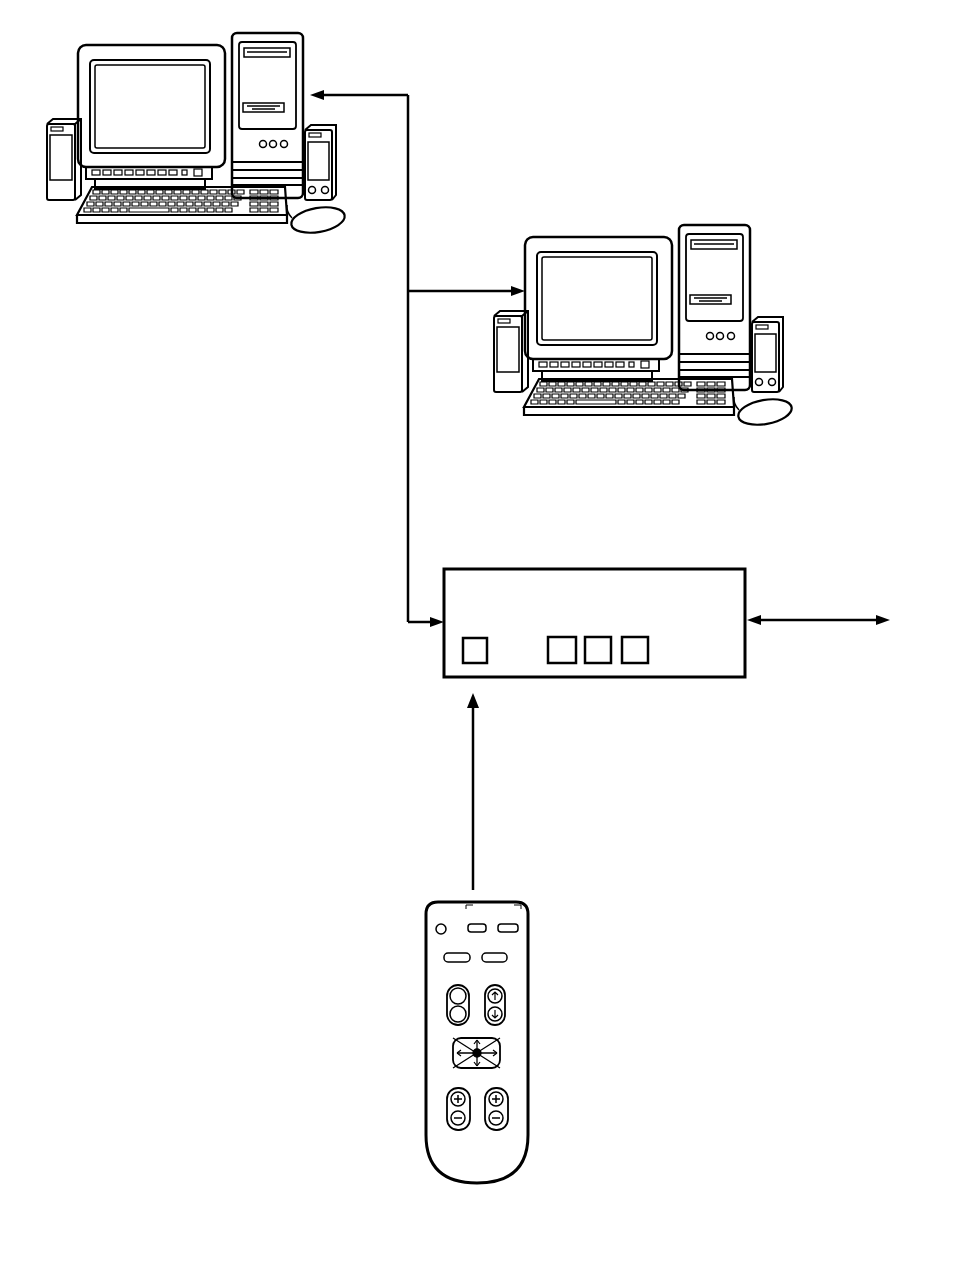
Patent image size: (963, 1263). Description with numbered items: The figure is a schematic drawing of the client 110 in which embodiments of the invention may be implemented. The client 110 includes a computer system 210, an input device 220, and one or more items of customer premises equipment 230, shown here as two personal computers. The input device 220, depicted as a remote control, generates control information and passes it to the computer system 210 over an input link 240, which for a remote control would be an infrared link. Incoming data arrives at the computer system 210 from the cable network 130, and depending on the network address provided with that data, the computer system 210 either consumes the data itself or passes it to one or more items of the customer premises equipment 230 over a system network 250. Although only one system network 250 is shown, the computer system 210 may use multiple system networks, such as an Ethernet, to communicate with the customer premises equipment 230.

The client 110 is at (665, 162).
The customer premises equipment 230 is at (164, 116).
The system network 250 is at (408, 482).
The computer system 210 is at (735, 664).
The cable network 130 is at (822, 618).
The input link 240 is at (473, 833).
The input device 220 is at (492, 1164).